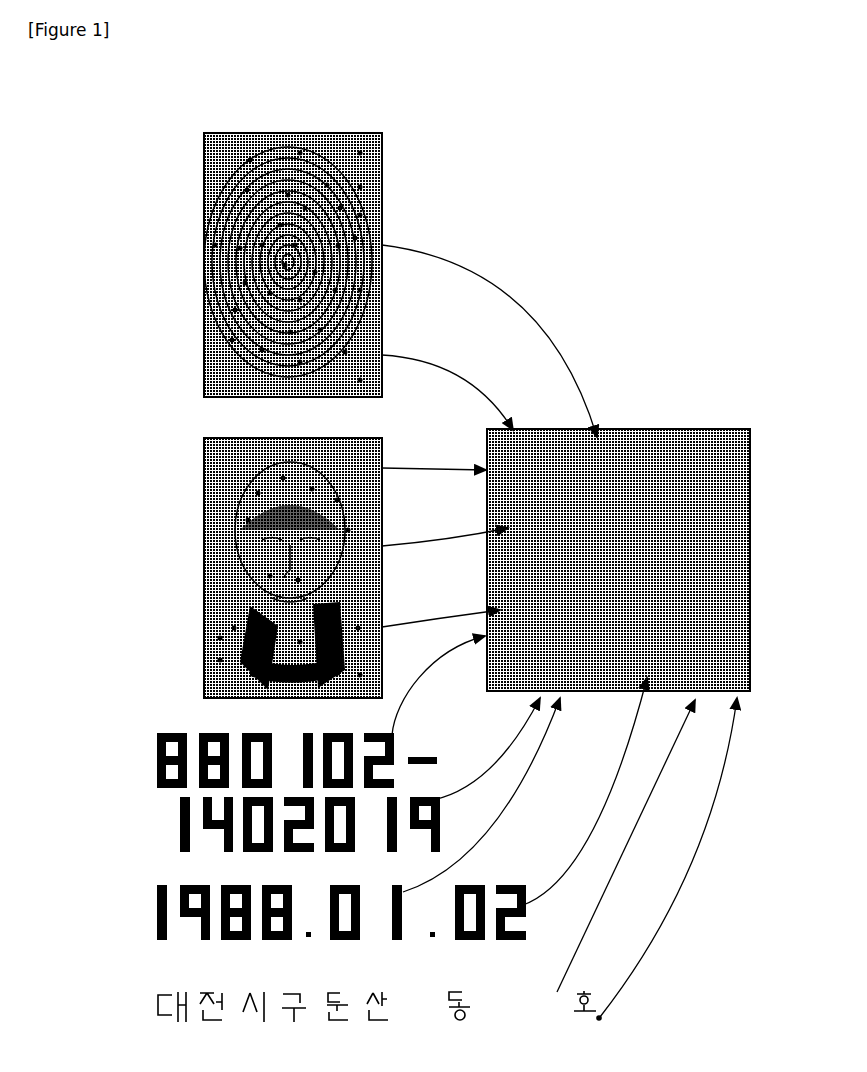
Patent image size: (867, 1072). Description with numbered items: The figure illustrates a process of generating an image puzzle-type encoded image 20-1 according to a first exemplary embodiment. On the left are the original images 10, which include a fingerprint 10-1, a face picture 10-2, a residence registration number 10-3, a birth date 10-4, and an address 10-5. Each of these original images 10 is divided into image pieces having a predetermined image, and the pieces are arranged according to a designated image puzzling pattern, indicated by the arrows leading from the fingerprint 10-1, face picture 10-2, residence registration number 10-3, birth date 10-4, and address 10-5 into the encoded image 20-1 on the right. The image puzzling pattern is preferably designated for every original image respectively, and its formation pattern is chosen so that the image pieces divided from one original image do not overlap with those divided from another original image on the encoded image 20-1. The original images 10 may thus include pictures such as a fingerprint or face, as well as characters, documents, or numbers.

The original images 10 is at (408, 155).
The fingerprint 10-1 is at (204, 199).
The face picture 10-2 is at (205, 462).
The residence registration number 10-3 is at (152, 748).
The birth date 10-4 is at (153, 913).
The address 10-5 is at (145, 1003).
The image puzzle-type encoded image 20-1 is at (671, 413).